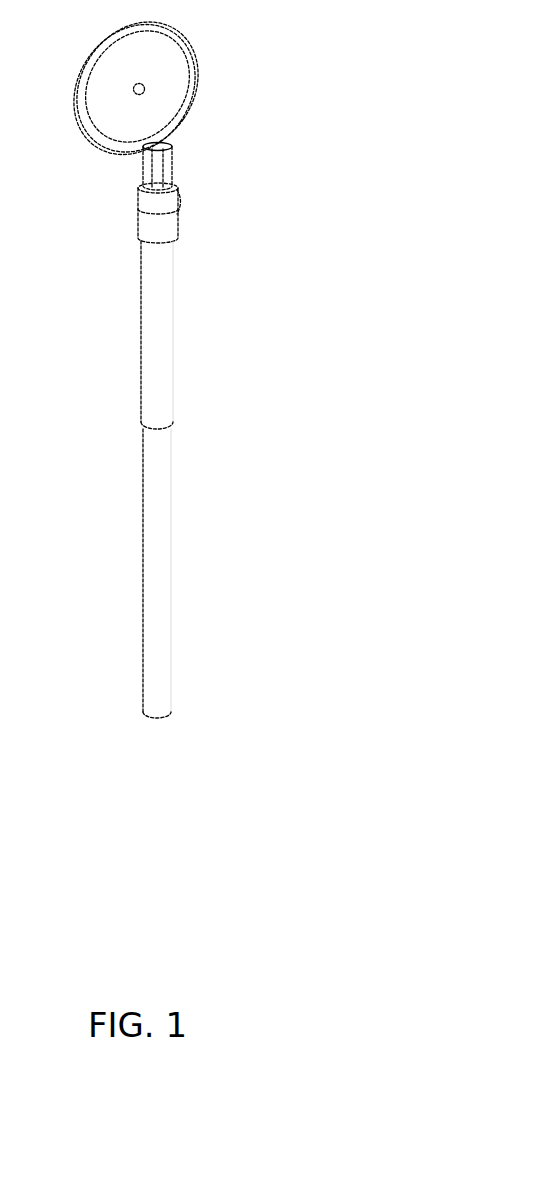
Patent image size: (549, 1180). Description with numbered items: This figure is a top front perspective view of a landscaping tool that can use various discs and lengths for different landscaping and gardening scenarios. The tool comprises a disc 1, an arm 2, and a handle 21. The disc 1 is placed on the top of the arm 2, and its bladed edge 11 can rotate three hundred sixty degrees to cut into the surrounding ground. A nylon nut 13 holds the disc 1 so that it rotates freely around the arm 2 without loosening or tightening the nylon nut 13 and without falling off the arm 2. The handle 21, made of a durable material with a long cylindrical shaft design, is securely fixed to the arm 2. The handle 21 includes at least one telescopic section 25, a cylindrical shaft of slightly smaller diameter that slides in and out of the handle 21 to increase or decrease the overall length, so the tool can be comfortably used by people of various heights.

The disc 1 is at (159, 89).
The bladed edge 11 is at (195, 54).
The nylon nut 13 is at (134, 87).
The arm 2 is at (168, 431).
The handle 21 is at (121, 335).
The telescopic section 25 is at (142, 183).